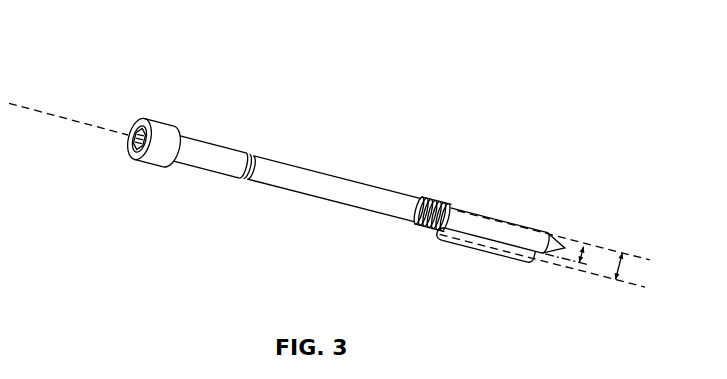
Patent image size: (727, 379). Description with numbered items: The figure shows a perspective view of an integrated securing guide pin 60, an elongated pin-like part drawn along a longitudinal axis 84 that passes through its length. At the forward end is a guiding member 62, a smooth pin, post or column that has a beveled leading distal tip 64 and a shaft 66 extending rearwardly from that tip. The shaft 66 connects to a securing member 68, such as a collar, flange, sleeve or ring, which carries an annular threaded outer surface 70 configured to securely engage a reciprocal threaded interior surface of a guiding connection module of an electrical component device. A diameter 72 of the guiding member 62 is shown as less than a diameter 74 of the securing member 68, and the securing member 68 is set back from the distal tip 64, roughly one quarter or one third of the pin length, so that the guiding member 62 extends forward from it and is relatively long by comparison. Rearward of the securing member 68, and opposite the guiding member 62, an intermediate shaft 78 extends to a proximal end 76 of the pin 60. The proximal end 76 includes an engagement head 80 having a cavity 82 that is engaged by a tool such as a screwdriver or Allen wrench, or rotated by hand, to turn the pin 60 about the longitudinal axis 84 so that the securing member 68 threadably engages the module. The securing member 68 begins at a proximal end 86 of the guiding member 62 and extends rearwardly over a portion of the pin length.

The integrated securing guide pin 60 is at (121, 62).
The guiding member 62 is at (479, 249).
The beveled leading distal tip 64 is at (567, 247).
The shaft 66 is at (505, 224).
The securing member 68 is at (428, 215).
The annular threaded outer surface 70 is at (422, 229).
The diameter of the guiding member 72 is at (583, 258).
The diameter of the securing member 74 is at (624, 267).
The proximal end 76 is at (134, 157).
The intermediate shaft 78 is at (321, 221).
The engagement head 80 is at (152, 118).
The cavity 82 is at (128, 140).
The longitudinal axis 84 is at (35, 110).
The proximal end of the guiding member 86 is at (408, 156).